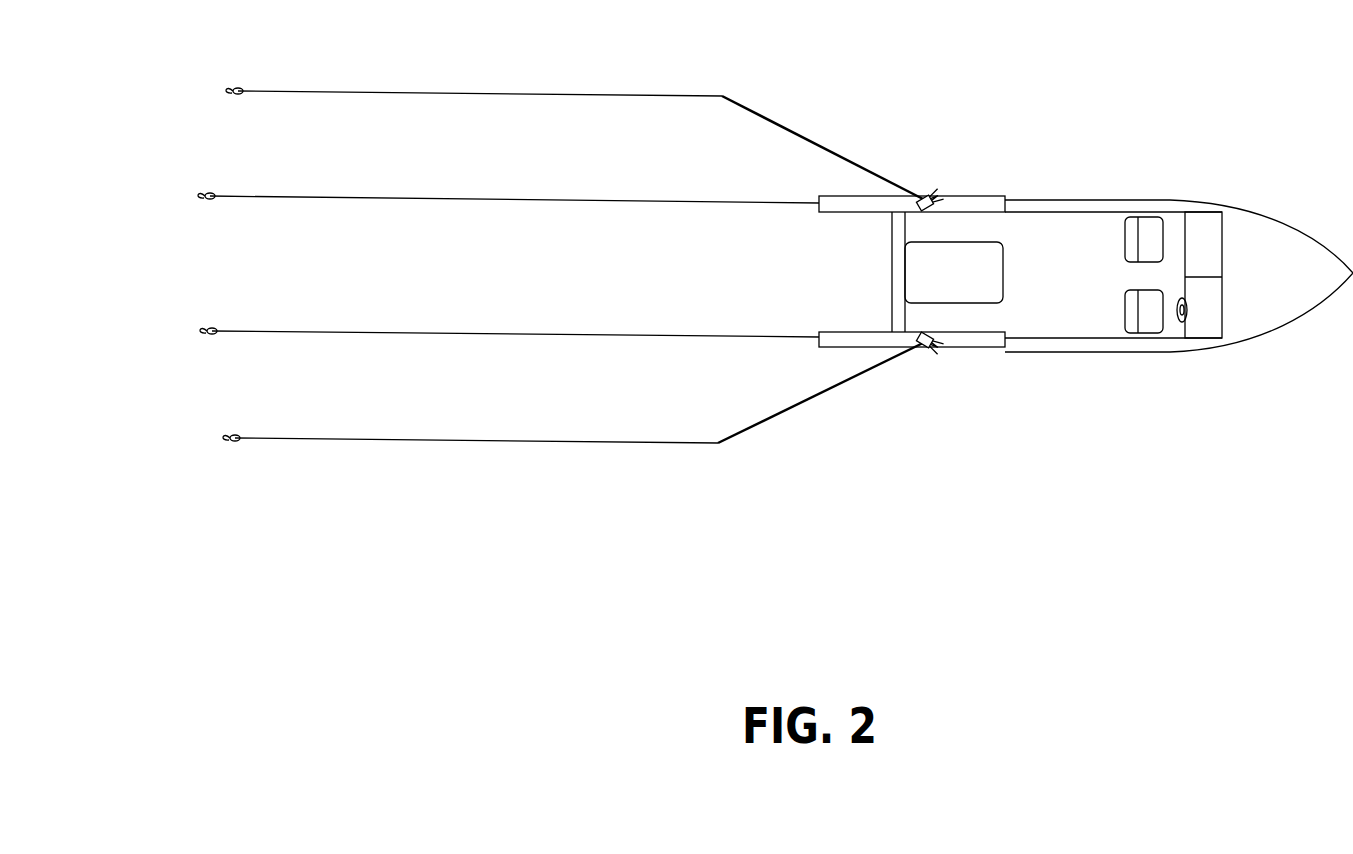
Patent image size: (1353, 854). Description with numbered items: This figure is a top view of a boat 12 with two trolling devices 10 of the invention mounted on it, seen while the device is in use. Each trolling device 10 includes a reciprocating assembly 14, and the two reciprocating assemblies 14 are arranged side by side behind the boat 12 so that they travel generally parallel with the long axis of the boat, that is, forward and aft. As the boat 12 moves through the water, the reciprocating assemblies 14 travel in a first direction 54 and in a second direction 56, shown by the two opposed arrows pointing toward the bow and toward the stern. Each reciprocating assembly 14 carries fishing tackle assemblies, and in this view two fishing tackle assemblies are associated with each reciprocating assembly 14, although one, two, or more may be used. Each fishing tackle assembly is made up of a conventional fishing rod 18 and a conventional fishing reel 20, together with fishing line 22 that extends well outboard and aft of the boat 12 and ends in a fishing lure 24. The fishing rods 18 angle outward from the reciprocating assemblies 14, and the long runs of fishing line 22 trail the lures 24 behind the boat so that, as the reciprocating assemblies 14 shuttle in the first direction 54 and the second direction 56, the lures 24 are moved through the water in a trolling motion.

The trolling device 10 is at (955, 152).
The boat 12 is at (1173, 200).
The reciprocating assembly 14 is at (925, 197).
The fishing rod 18 is at (722, 97).
The fishing reel 20 is at (926, 222).
The fishing line 22 is at (405, 93).
The fishing lure 24 is at (238, 94).
The first direction 54 is at (940, 318).
The second direction 56 is at (868, 315).